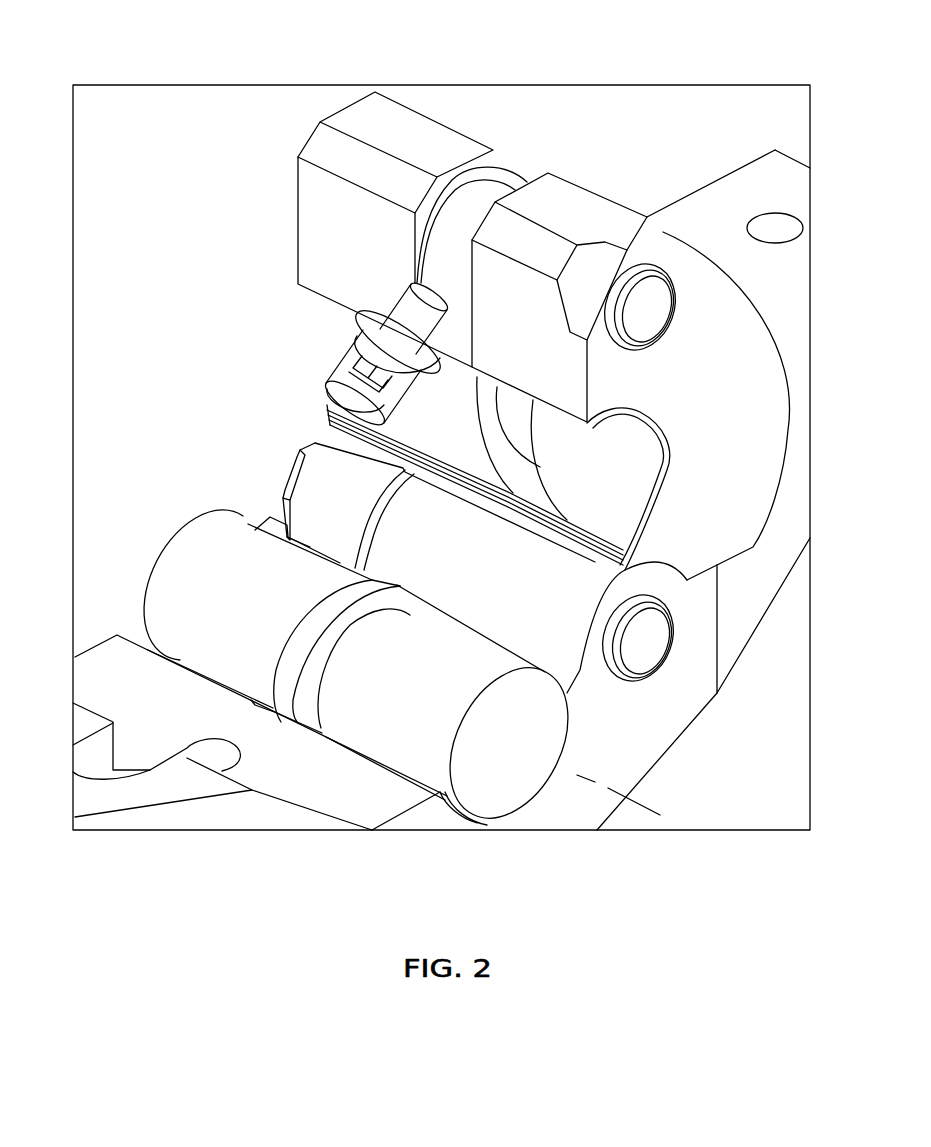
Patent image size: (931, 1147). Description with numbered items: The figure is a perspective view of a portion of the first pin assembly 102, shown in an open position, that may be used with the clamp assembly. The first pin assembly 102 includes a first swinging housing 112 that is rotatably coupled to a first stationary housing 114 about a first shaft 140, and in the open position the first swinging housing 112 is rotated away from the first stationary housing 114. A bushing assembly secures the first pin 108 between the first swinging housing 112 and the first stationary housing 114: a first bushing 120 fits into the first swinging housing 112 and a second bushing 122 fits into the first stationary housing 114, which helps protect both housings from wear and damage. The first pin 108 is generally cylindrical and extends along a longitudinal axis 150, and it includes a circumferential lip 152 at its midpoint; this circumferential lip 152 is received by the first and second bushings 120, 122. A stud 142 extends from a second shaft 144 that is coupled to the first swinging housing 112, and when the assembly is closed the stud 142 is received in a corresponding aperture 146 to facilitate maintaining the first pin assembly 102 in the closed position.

The first pin assembly 102 is at (282, 50).
The first pin 108 is at (560, 732).
The first swinging housing 112 is at (773, 422).
The first stationary housing 114 is at (438, 820).
The first bushing 120 is at (665, 492).
The second bushing 122 is at (473, 822).
The first shaft 140 is at (640, 642).
The stud 142 is at (408, 312).
The second shaft 144 is at (648, 310).
The aperture 146 is at (102, 756).
The longitudinal axis 150 is at (647, 800).
The circumferential lip 152 is at (290, 645).